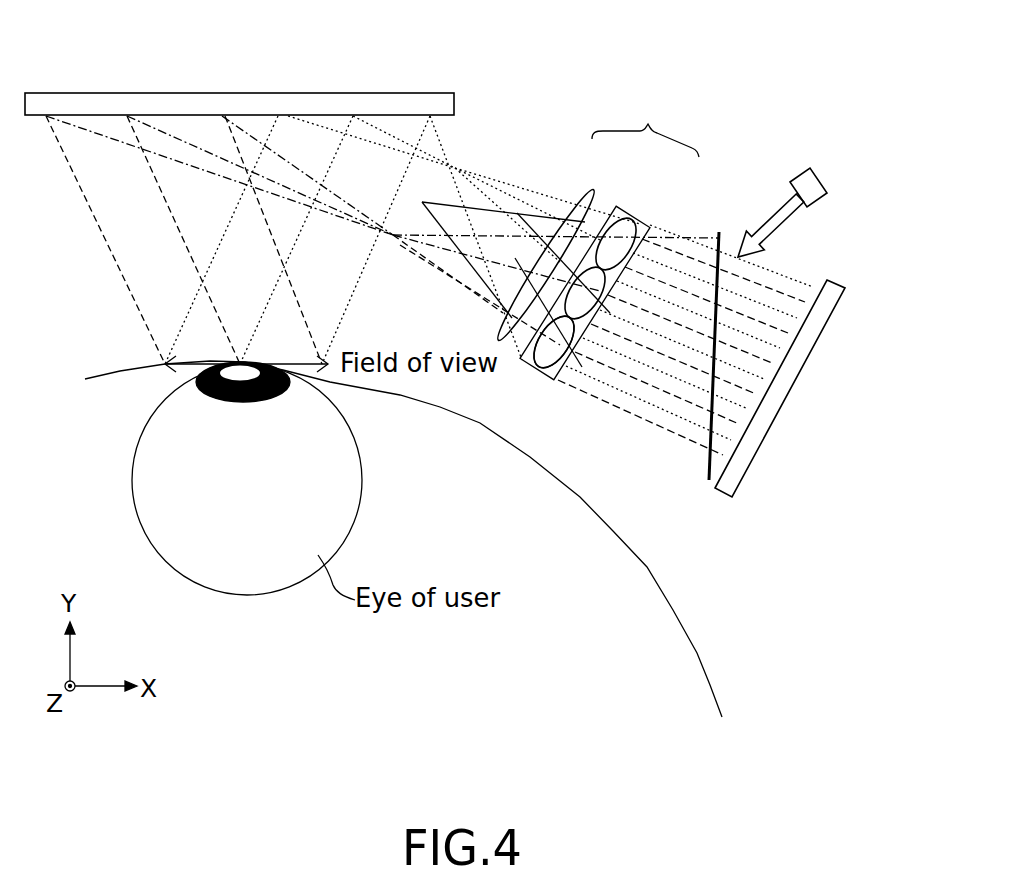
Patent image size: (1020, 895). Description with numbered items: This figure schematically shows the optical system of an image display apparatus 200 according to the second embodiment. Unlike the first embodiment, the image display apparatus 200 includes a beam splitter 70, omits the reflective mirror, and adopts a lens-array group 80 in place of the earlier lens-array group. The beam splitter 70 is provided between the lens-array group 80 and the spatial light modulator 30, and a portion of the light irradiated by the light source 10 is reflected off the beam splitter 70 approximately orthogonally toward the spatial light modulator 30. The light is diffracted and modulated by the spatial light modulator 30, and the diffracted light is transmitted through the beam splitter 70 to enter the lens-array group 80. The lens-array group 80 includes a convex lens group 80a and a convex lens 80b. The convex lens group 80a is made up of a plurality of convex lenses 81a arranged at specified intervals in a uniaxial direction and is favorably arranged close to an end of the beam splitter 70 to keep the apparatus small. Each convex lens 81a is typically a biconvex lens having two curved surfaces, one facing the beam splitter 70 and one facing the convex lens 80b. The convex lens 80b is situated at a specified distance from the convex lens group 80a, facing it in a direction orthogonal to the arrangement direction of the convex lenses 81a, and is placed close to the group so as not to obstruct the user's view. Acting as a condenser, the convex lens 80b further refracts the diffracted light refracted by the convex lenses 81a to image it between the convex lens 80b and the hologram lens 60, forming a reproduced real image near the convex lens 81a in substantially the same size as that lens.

The image display apparatus 200 is at (543, 68).
The hologram lens 60 is at (413, 100).
The lens-array group 80 is at (645, 128).
The convex lens 80b is at (593, 196).
The convex lens group 80a is at (634, 213).
The convex lens 81a is at (527, 373).
The beam splitter 70 is at (708, 466).
The spatial light modulator 30 is at (837, 287).
The light source 10 is at (803, 180).